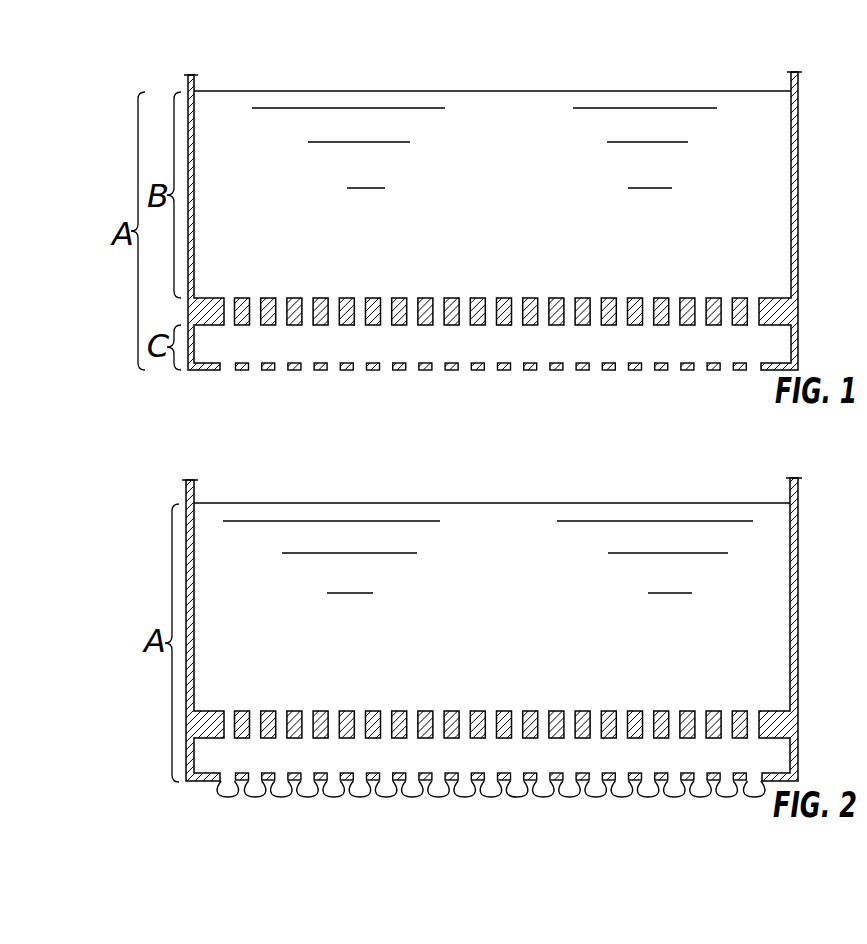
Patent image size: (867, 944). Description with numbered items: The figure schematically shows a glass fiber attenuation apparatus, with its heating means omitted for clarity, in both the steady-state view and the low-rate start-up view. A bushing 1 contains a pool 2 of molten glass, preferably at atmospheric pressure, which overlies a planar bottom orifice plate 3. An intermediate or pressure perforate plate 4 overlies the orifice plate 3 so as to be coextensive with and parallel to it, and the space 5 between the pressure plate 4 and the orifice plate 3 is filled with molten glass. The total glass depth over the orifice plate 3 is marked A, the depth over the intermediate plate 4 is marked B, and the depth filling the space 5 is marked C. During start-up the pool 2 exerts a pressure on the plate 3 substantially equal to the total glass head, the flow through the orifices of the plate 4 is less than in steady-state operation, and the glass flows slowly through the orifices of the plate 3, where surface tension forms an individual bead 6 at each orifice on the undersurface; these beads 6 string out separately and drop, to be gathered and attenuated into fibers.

In FIG. 1, the bushing 1 is at (798, 112).
In FIG. 2, the bushing 1 is at (798, 530).
In FIG. 1, the pool of molten glass 2 is at (490, 197).
In FIG. 2, the pool of molten glass 2 is at (511, 615).
In FIG. 1, the bottom orifice plate 3 is at (351, 337).
In FIG. 2, the bottom orifice plate 3 is at (346, 746).
In FIG. 1, the intermediate or pressure perforate plate 4 is at (295, 268).
In FIG. 2, the intermediate or pressure perforate plate 4 is at (291, 684).
In FIG. 1, the space between the pressure plate and the orifice plate 5 is at (515, 351).
In FIG. 2, the space between the pressure plate and the orifice plate 5 is at (520, 764).
In FIG. 2, the bead 6 is at (261, 804).